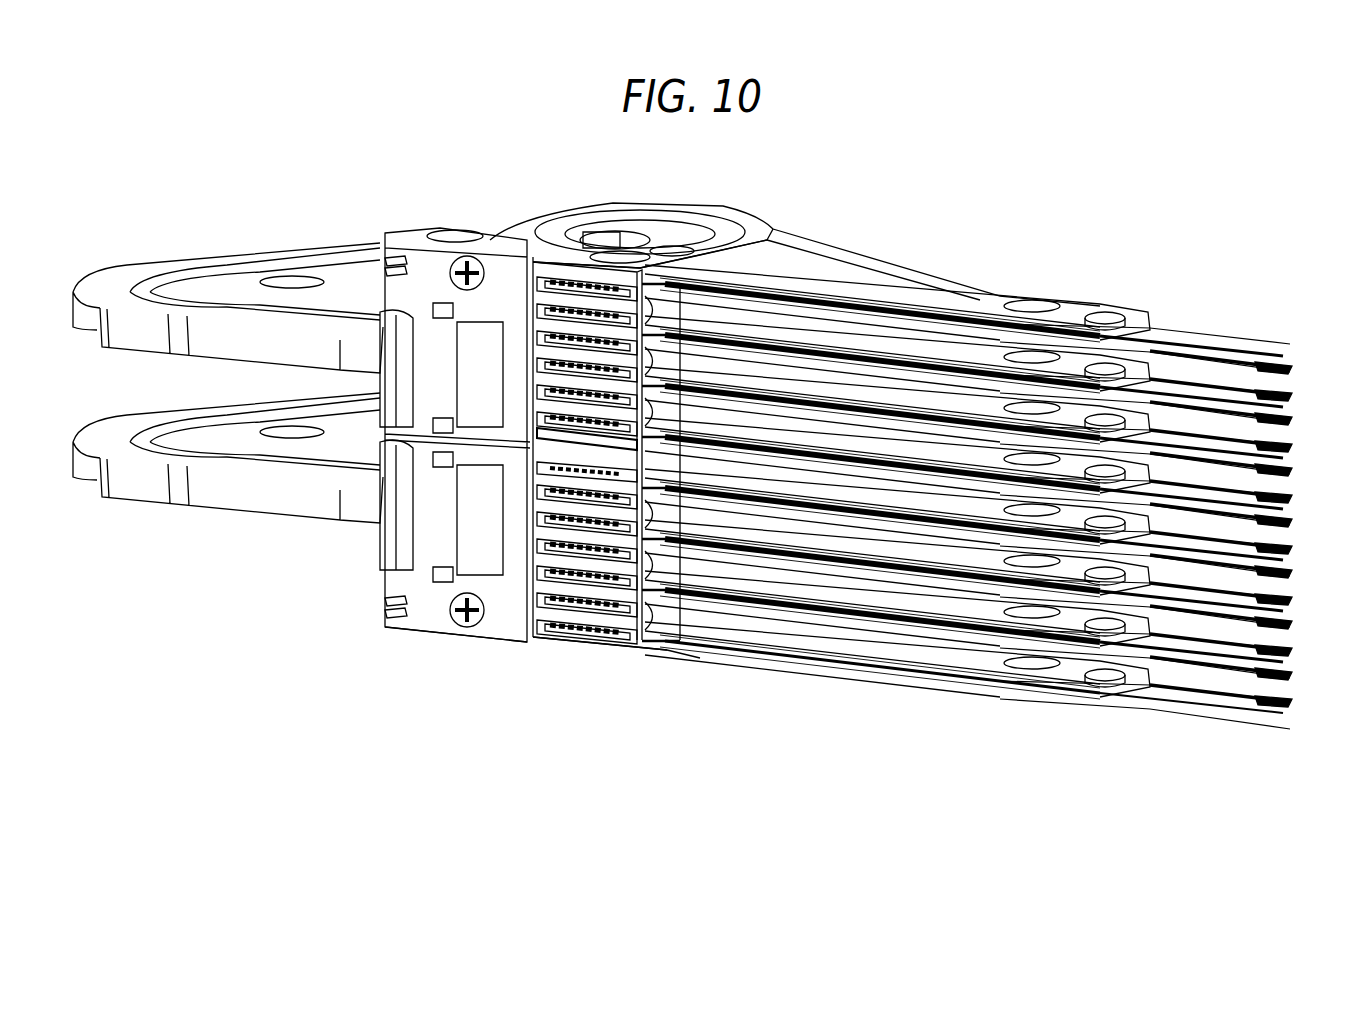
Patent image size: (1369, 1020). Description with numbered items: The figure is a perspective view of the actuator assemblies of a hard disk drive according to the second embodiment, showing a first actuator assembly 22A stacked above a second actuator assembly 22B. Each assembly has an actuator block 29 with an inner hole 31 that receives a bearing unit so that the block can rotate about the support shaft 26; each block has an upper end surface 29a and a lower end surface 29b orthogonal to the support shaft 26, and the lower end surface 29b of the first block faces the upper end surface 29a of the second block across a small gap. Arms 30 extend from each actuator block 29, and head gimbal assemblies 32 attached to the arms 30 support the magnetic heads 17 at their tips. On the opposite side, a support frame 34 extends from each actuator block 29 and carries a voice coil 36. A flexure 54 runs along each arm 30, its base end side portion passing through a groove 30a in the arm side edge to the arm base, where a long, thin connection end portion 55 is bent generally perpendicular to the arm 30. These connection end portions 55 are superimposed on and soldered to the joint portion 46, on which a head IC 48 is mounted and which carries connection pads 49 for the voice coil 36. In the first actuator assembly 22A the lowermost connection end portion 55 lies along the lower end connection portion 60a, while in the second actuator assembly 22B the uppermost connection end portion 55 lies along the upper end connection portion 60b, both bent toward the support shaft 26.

The magnetic head 17 is at (1248, 383).
The first actuator assembly 22A is at (858, 228).
The second actuator assembly 22B is at (712, 688).
The support shaft 26 is at (636, 240).
The actuator block 29 is at (466, 226).
The upper end surface 29a is at (607, 204).
The lower end surface 29b is at (450, 632).
The arm 30 is at (915, 400).
The groove 30a is at (940, 430).
The inner hole 31 is at (554, 230).
The head gimbal assembly 32 is at (1206, 343).
The support frame 34 is at (200, 343).
The voice coil 36 is at (240, 258).
The joint portion 46 is at (492, 260).
The head IC 48 is at (470, 365).
The connection pad 49 is at (397, 268).
The flexure 54 is at (1177, 490).
The connection end portion 55 is at (537, 362).
The lower end connection portion 60a is at (520, 432).
The upper end connection portion 60b is at (525, 455).